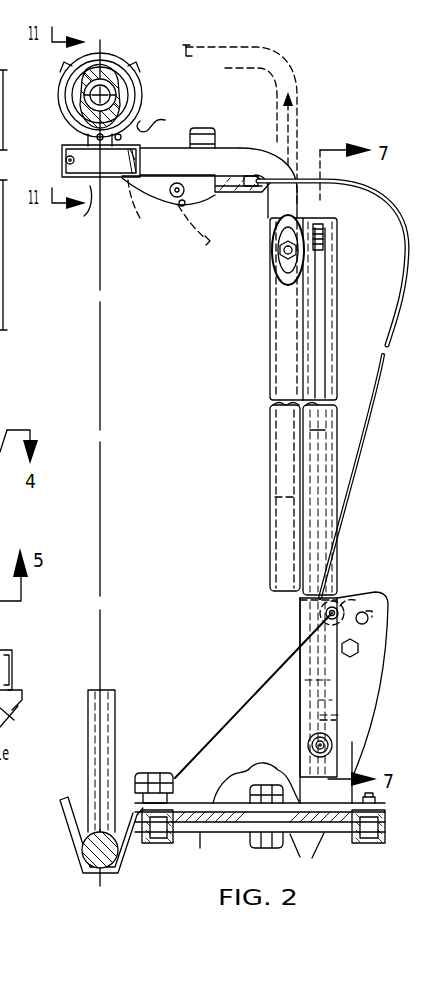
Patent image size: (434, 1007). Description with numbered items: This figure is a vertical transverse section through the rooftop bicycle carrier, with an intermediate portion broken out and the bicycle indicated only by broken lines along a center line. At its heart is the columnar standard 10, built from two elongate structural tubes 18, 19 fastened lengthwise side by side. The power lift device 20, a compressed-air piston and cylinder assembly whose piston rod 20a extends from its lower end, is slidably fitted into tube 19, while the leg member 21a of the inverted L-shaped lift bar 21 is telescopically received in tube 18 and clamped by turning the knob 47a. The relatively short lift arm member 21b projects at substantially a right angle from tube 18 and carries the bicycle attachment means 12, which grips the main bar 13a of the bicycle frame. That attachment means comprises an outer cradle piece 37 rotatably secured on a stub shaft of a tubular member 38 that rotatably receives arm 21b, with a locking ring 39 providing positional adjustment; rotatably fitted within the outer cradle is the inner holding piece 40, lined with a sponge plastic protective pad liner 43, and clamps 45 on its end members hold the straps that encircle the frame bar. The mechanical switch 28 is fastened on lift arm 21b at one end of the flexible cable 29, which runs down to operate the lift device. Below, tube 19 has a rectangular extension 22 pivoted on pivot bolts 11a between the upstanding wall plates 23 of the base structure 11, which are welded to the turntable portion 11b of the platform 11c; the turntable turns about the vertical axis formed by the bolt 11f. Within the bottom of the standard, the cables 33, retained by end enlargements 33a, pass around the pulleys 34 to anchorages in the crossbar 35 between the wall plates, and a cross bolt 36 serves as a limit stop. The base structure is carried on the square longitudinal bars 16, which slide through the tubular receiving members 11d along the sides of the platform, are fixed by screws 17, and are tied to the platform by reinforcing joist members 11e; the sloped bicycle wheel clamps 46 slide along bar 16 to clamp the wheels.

The columnar standard 10 is at (258, 453).
The base structure 11 is at (334, 846).
The pivot bolts 11a is at (306, 745).
The turntable portion 11b is at (222, 778).
The platform 11c is at (200, 852).
The tubular receiving members 11d is at (150, 845).
The reinforcing joist members 11e is at (307, 856).
The bolt 11f is at (252, 845).
The bicycle attachment means 12 is at (121, 45).
The main bar 13a is at (138, 90).
The longitudinal bars 16 is at (158, 845).
The screws 17 is at (3, 95).
The structural tube 18 is at (270, 418).
The structural tube 19 is at (340, 292).
The power lift device 20 is at (330, 430).
The piston rod 20a is at (338, 724).
The lift bar 21 is at (266, 198).
The leg member 21a is at (283, 308).
The lift arm member 21b is at (246, 160).
The rectangular extension 22 is at (300, 638).
The upstanding wall plates 23 is at (262, 688).
The mechanical switch 28 is at (198, 241).
The flexible cable 29 is at (390, 208).
The cables 33 is at (382, 630).
The end enlargements 33a is at (332, 240).
The pulleys 34 is at (338, 598).
The crossbar 35 is at (368, 612).
The cross bolt 36 is at (360, 650).
The outer cradle piece 37 is at (62, 100).
The tubular member 38 is at (75, 214).
The locking ring 39 is at (63, 160).
The inner cradle or holding piece 40 is at (68, 98).
The protective pad liner 43 is at (140, 102).
The clamps 45 is at (163, 120).
The bicycle wheel clamps 46 is at (62, 852).
The knob 47a is at (272, 262).